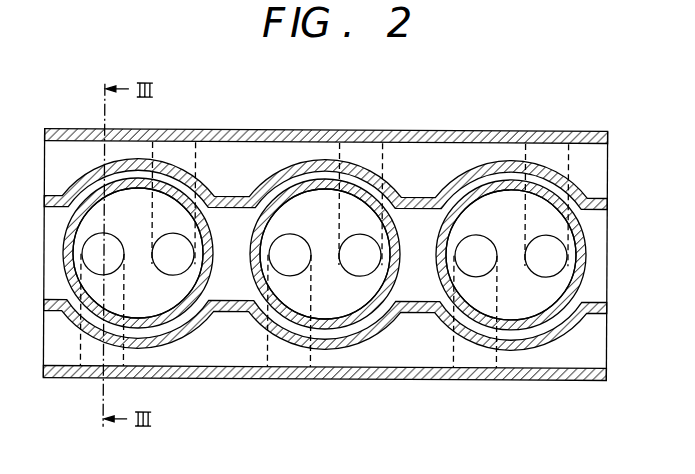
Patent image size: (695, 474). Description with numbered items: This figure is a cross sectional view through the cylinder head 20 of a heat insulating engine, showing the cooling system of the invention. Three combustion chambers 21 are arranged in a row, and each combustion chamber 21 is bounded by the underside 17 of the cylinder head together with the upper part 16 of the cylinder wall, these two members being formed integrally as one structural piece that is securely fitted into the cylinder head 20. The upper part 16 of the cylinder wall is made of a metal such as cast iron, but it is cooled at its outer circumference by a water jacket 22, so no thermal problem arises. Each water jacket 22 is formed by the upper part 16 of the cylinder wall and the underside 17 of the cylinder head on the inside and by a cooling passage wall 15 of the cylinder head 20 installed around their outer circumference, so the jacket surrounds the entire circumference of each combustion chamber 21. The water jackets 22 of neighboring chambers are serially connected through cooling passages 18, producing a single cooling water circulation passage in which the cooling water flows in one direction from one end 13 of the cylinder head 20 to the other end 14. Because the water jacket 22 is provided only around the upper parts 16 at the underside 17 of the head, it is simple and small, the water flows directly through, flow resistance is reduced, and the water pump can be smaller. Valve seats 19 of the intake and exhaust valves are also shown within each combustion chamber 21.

The one end of the cylinder head 13 is at (50, 248).
The other end of the cylinder head 14 is at (597, 255).
The cooling passage wall 15 is at (272, 177).
The upper part of the cylinder wall 16 is at (141, 330).
The underside of the cylinder head 17 is at (163, 300).
The cooling passage 18 is at (227, 245).
The valve seat 19 is at (162, 249).
The cylinder head 20 is at (421, 131).
The combustion chamber 21 is at (131, 298).
The water jacket 22 is at (134, 175).